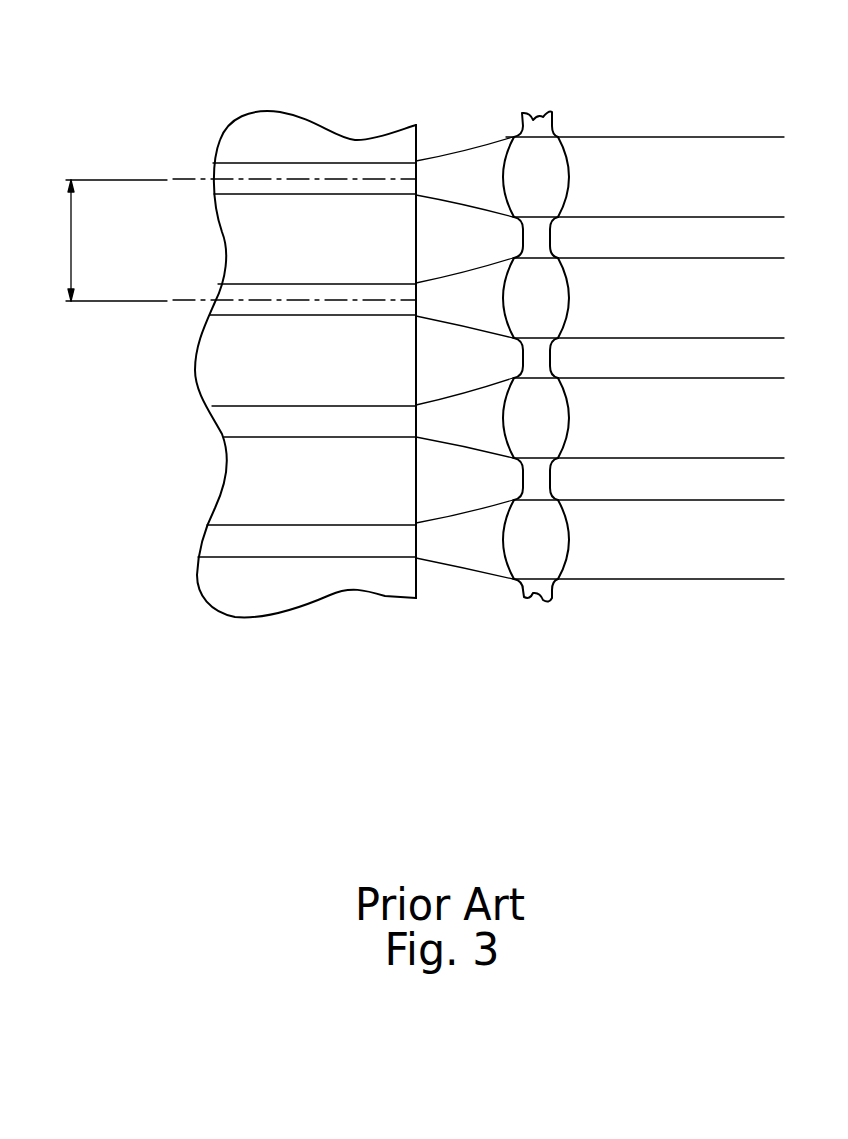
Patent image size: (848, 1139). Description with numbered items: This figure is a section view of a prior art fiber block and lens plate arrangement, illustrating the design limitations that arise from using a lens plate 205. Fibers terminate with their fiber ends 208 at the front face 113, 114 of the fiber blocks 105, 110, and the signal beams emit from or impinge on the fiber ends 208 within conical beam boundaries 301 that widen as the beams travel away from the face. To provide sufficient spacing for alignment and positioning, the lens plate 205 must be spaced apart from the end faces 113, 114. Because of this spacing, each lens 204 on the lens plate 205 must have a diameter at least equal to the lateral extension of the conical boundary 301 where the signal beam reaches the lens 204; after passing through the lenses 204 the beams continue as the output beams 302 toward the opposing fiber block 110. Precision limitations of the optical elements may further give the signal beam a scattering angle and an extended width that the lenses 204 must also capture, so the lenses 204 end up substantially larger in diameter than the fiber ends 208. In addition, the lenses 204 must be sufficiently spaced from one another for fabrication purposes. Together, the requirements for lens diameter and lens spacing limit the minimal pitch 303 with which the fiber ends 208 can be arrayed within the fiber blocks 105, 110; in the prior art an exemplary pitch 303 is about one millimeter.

The fiber block 105 is at (282, 331).
The fiber block 110 is at (298, 122).
The front face 113 is at (444, 457).
The front face 114 is at (418, 487).
The fiber ends 208 is at (418, 547).
The conical beam boundaries 301 is at (471, 142).
The collimated output beams 302 is at (707, 135).
The lens 204 is at (605, 349).
The lens plate 205 is at (547, 601).
The pitch 303 is at (99, 240).